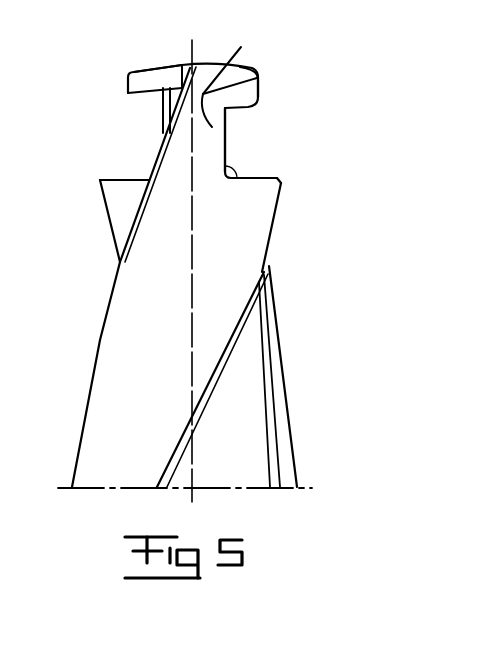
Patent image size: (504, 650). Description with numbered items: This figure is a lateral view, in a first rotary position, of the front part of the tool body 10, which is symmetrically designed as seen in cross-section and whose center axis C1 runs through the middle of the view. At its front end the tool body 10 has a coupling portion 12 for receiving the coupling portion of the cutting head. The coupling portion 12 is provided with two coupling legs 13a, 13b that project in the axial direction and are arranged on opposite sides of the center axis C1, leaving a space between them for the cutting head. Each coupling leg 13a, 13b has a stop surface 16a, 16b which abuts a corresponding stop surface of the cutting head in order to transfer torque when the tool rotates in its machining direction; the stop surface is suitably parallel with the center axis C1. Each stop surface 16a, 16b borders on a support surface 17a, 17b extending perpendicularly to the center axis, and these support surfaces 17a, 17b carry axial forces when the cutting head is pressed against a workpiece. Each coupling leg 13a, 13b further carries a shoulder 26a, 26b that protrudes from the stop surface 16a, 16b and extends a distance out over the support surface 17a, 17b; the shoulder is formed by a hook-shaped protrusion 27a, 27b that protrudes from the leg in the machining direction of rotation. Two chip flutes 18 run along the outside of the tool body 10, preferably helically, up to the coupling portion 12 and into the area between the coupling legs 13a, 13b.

The tool body 10 is at (262, 270).
The coupling portion 12 is at (328, 130).
The coupling leg 13a is at (163, 128).
The coupling leg 13b is at (232, 57).
The stop surface 16a is at (163, 134).
The stop surface 16b is at (225, 133).
The support surface 17a is at (115, 178).
The support surface 17b is at (277, 181).
The chip flute 18 is at (253, 388).
The shoulder 26a is at (163, 97).
The shoulder 26b is at (261, 103).
The hook-shaped protrusion 27a is at (152, 73).
The hook-shaped protrusion 27b is at (260, 77).
The center axis C1 is at (192, 325).